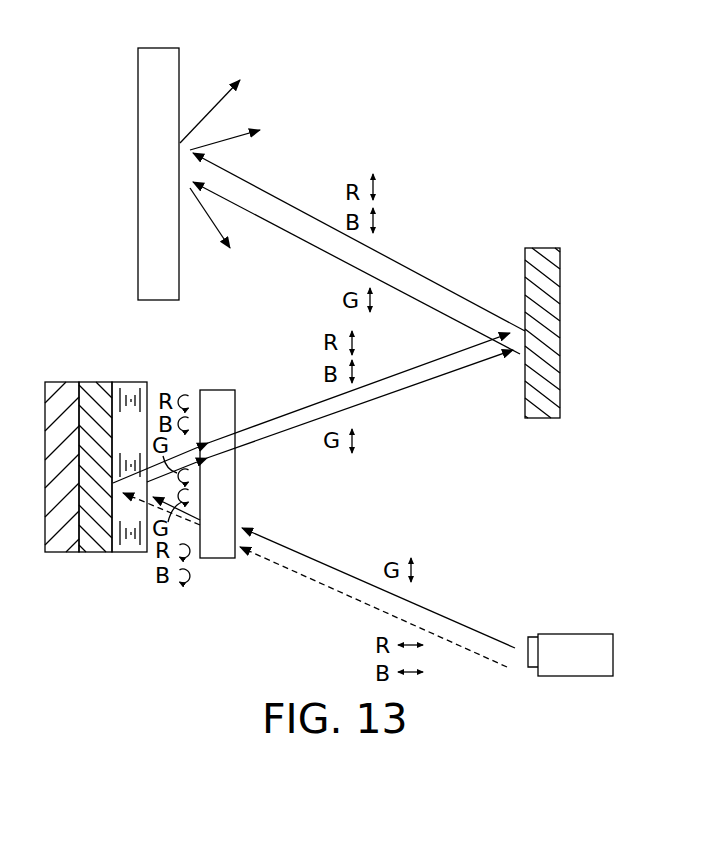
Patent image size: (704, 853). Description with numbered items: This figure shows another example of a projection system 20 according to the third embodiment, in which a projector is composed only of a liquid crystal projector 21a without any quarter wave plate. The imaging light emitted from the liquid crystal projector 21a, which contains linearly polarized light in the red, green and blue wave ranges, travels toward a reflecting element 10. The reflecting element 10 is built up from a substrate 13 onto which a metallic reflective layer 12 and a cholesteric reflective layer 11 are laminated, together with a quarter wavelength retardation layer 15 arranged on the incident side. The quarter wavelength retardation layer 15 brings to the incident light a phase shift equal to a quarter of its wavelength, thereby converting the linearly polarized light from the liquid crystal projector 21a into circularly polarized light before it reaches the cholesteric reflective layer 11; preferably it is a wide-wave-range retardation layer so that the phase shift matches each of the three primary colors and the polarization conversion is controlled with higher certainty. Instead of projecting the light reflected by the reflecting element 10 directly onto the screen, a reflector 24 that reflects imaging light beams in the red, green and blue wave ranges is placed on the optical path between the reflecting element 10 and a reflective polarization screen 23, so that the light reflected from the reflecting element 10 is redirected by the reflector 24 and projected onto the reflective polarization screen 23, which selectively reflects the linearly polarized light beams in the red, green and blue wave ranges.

The reflecting element 10 is at (96, 293).
The cholesteric reflective layer 11 is at (134, 386).
The metallic reflective layer 12 is at (107, 382).
The substrate 13 is at (64, 382).
The quarter wavelength retardation layer 15 is at (222, 390).
The projection system 20 is at (452, 134).
The liquid crystal projector 21a is at (577, 634).
The reflective polarization screen 23 is at (159, 50).
The reflector 24 is at (541, 248).